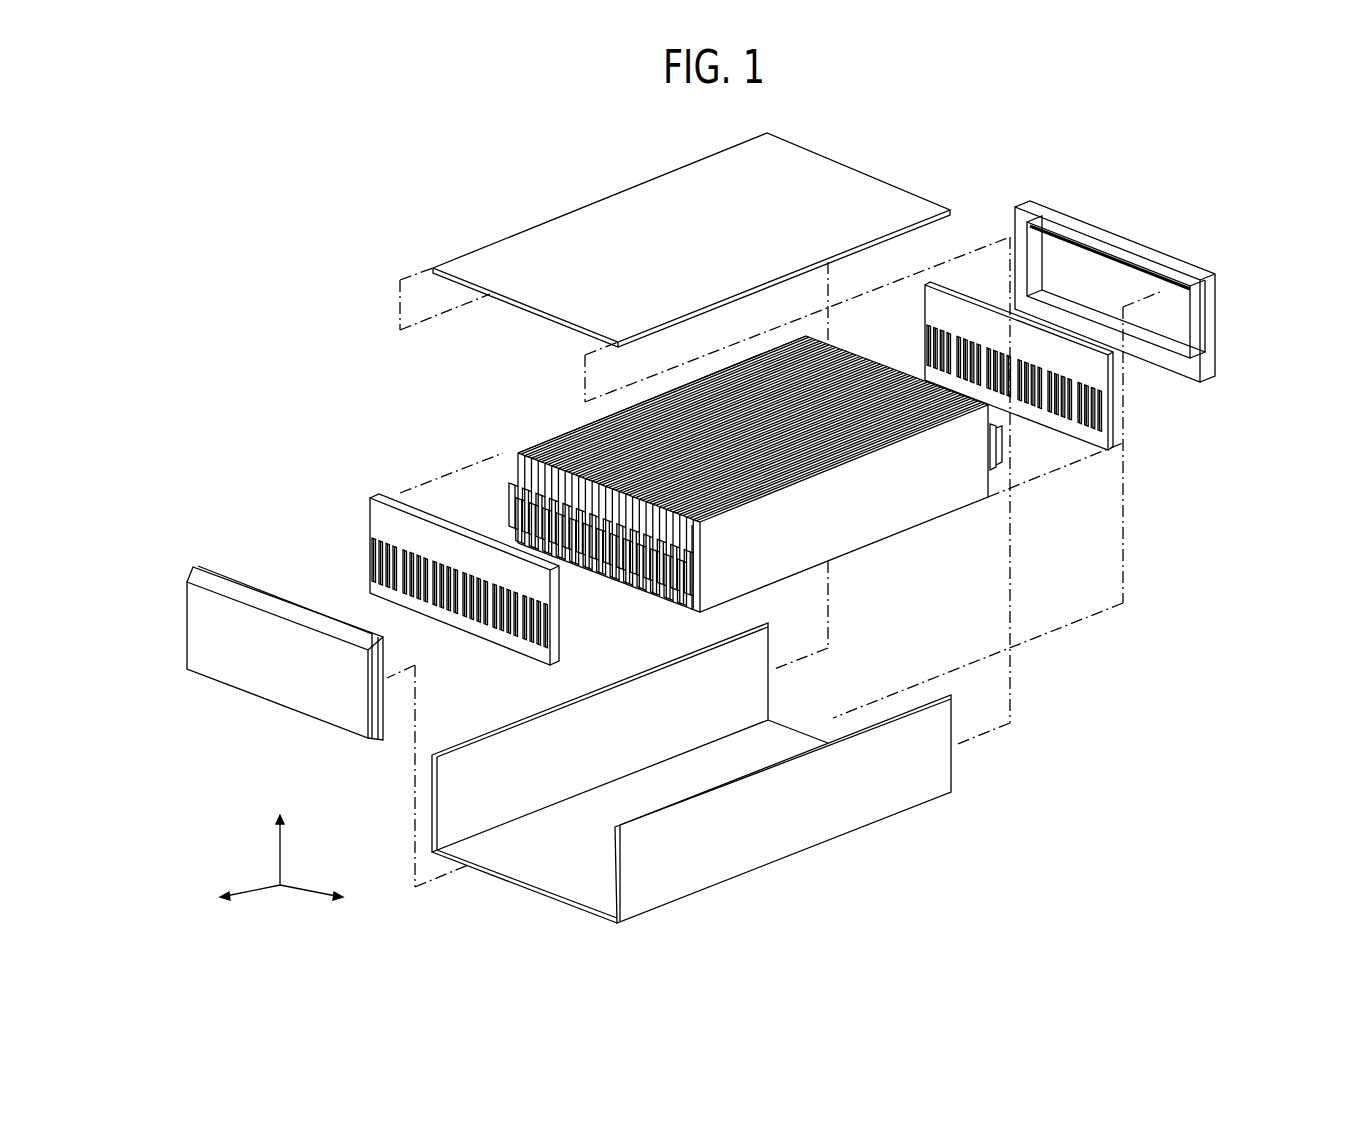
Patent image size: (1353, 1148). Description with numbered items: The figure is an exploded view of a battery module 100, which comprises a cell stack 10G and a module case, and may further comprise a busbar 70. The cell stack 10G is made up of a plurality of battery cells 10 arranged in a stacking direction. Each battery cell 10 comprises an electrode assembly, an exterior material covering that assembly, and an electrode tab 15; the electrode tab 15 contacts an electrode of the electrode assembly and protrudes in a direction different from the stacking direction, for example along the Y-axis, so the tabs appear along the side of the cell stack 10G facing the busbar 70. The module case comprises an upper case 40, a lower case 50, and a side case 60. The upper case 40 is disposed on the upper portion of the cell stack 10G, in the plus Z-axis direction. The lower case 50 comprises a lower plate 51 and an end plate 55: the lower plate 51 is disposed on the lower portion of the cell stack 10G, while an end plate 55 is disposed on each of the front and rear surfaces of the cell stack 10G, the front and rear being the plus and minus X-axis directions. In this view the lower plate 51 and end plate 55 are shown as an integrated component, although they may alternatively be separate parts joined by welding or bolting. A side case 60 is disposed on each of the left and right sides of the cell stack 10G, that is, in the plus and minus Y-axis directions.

The battery module 100 is at (247, 191).
The battery cell 10 is at (885, 525).
The cell stack 10G is at (985, 501).
The electrode tab 15 is at (998, 442).
The upper case 40 is at (568, 217).
The lower case 50 is at (691, 793).
The lower plate 51 is at (582, 912).
The end plate 55 is at (635, 885).
The side case 60 is at (1113, 240).
The busbar 70 is at (1110, 394).